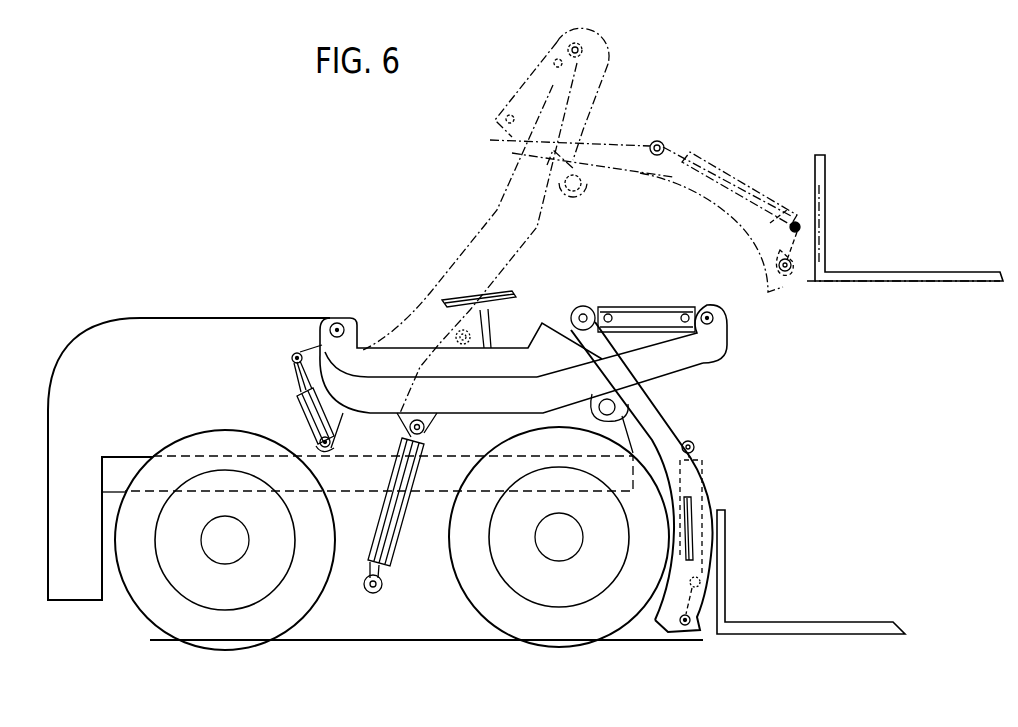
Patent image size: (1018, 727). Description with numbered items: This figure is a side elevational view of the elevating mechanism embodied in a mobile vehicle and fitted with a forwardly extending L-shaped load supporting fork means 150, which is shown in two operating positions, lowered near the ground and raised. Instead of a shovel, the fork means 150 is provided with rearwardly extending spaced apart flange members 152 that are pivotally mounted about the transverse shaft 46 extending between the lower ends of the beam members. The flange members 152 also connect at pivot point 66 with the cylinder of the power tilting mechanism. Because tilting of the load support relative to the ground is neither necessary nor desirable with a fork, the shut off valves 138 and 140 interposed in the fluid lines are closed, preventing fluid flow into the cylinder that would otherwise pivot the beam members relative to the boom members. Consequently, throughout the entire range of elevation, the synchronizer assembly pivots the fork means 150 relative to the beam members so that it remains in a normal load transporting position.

The transverse shaft 46 is at (686, 626).
The pivot point 66 is at (707, 576).
The shut off valve 138 is at (688, 306).
The shut off valve 140 is at (608, 306).
The fork means 150 is at (722, 617).
The flange members 152 is at (708, 603).